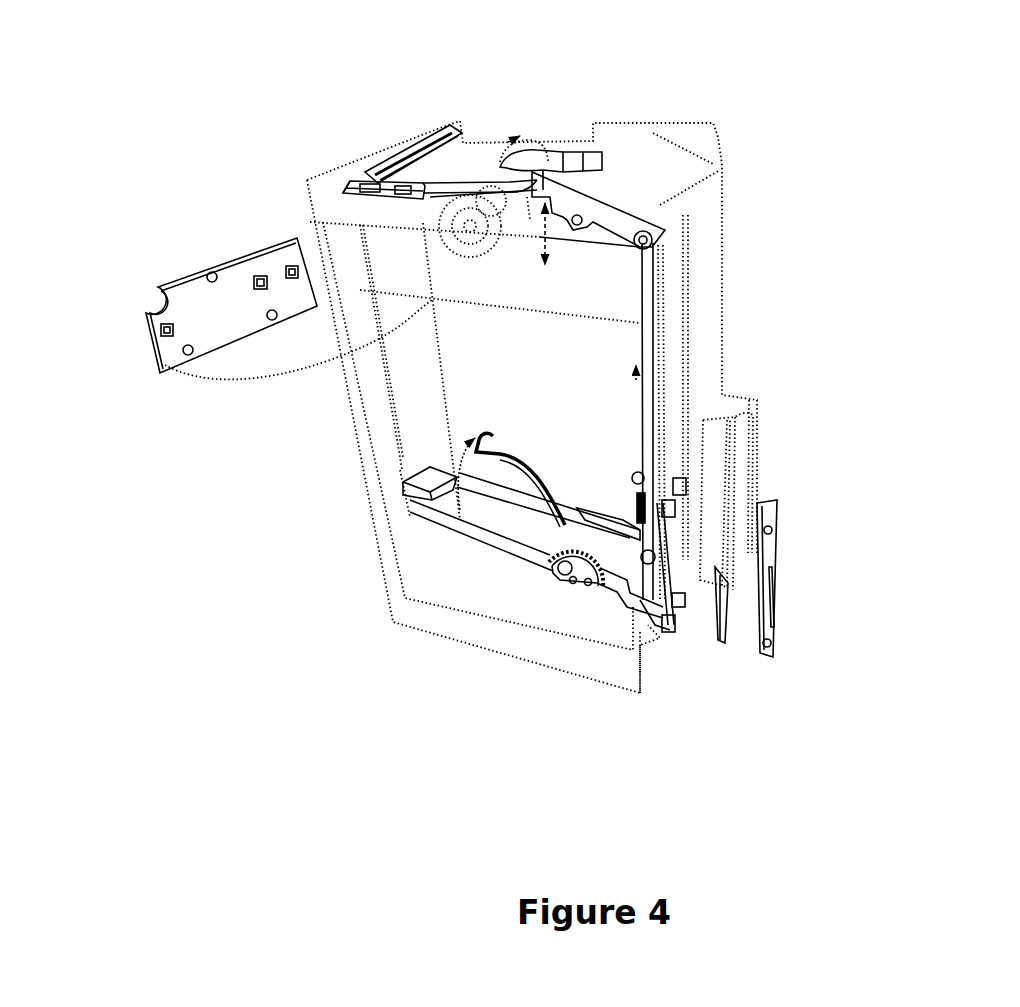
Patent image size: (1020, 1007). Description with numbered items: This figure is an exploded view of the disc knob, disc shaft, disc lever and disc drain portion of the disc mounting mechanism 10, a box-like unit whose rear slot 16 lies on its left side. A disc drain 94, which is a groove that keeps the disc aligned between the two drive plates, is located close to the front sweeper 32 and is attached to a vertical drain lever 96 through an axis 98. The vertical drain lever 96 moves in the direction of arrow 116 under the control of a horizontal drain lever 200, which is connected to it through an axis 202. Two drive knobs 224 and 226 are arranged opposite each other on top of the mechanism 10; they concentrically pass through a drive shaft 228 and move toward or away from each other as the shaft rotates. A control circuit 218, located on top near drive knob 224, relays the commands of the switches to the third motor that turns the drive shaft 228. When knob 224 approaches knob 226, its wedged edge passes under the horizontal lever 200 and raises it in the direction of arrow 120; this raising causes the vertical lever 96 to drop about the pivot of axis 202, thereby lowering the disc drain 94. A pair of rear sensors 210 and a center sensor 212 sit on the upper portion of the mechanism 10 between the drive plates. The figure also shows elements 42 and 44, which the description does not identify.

The disc mounting mechanism 10 is at (250, 61).
The rear slot 16 is at (372, 407).
The front sweeper 32 is at (541, 495).
The gear 42 is at (571, 582).
The side plate 44 is at (735, 584).
The disc drain 94 is at (425, 512).
The vertical drain lever 96 is at (650, 386).
The axis 98 is at (650, 568).
The arrow 116 is at (632, 410).
The arrow 120 is at (530, 234).
The horizontal drain lever 200 is at (599, 212).
The axis 202 is at (655, 226).
The rear sensors 210 is at (287, 267).
The center sensor 212 is at (166, 338).
The control circuit 218 is at (366, 177).
The drive knob 224 is at (486, 181).
The drive knob 226 is at (547, 141).
The drive shaft 228 is at (476, 238).